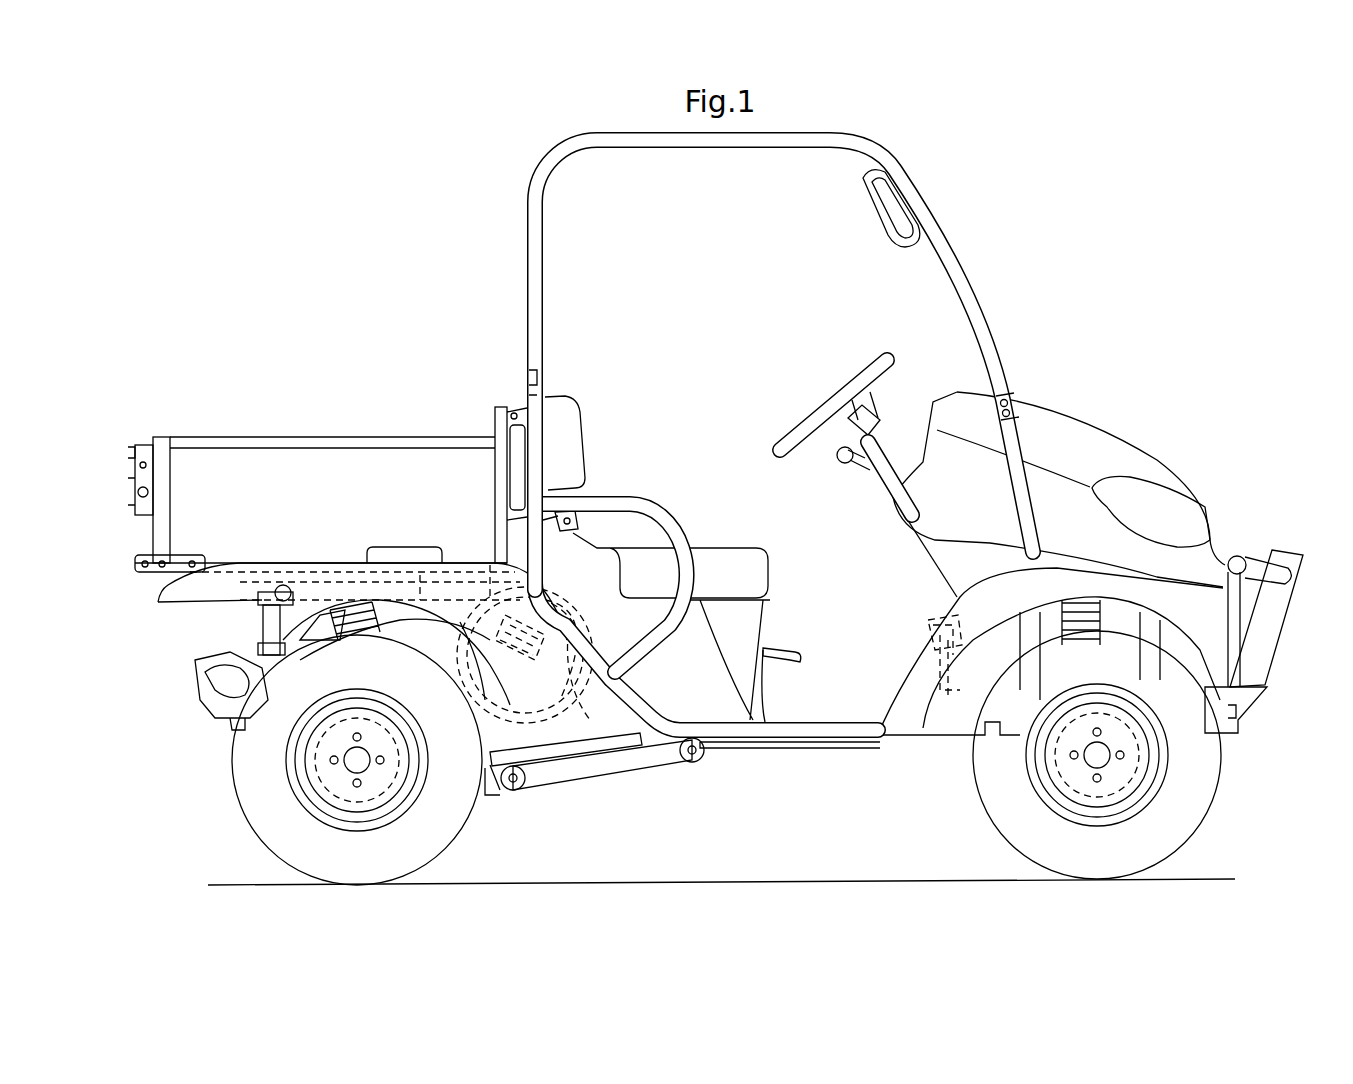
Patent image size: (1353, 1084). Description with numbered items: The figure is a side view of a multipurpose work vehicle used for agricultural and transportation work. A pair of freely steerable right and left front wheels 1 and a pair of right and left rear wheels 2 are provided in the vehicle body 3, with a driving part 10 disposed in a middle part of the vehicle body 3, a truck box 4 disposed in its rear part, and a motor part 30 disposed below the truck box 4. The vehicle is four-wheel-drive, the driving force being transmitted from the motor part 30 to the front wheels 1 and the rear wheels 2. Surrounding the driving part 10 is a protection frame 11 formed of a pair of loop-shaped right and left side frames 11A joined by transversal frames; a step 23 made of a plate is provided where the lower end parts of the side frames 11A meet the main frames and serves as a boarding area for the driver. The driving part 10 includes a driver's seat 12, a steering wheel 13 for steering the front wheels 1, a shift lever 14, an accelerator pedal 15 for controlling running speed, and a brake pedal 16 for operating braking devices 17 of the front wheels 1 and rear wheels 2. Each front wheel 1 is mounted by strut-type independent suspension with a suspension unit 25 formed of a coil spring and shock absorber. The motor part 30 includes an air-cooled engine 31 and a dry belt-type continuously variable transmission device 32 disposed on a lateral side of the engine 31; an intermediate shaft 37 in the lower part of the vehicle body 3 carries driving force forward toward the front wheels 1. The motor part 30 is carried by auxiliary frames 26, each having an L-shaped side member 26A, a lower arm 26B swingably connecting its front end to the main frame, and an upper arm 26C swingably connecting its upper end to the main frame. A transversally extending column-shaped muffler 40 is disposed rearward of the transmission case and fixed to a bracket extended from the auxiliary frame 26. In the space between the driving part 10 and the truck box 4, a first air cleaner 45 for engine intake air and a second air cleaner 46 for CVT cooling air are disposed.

The front wheels 1 is at (1215, 787).
The rear wheels 2 is at (245, 803).
The vehicle body 3 is at (911, 750).
The truck box 4 is at (262, 440).
The driving part 10 is at (706, 365).
The protection frame 11 is at (706, 365).
The side frames 11A is at (525, 243).
The driver's seat 12 is at (740, 552).
The steering wheel 13 is at (845, 393).
The shift lever 14 is at (848, 460).
The accelerator pedal 15 is at (910, 690).
The brake pedal 16 is at (925, 630).
The braking devices 17 is at (357, 795).
The step 23 is at (818, 723).
The suspension unit 25 is at (355, 620).
The auxiliary frames 26 is at (502, 741).
The side members 26A is at (487, 797).
The lower arms 26B is at (662, 763).
The upper arms 26C is at (413, 623).
The motor part 30 is at (245, 637).
The engine 31 is at (490, 598).
The belt-type continuously variable transmission device 32 is at (482, 687).
The intermediate shaft 37 is at (566, 748).
The muffler 40 is at (220, 710).
The first air cleaner 45 is at (521, 432).
The second air cleaner 46 is at (483, 427).